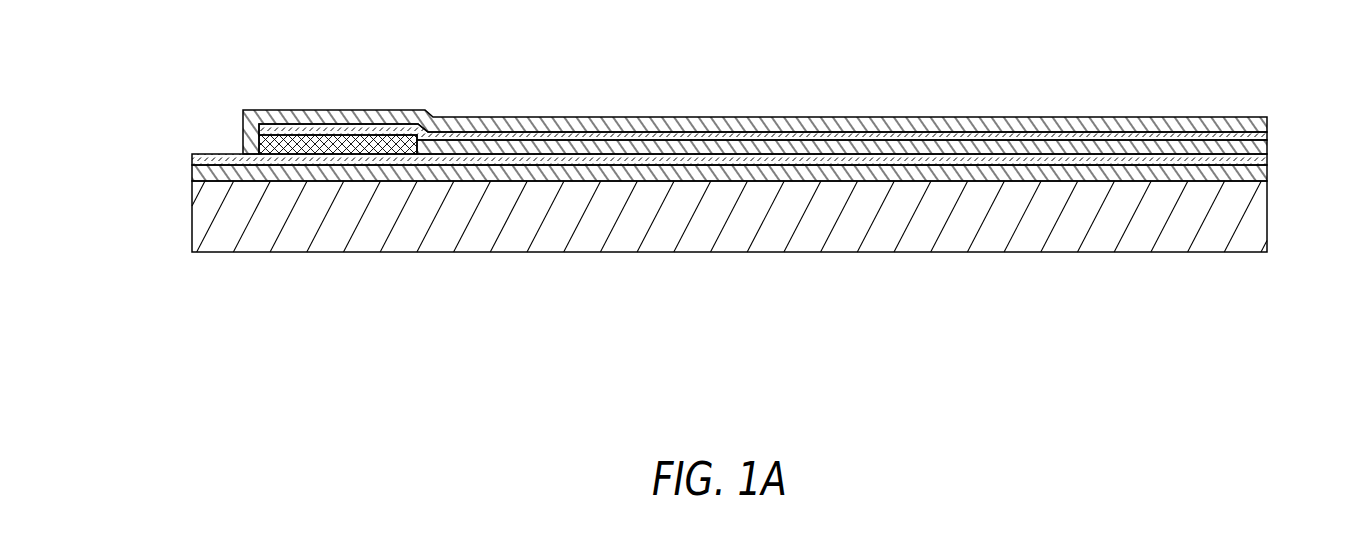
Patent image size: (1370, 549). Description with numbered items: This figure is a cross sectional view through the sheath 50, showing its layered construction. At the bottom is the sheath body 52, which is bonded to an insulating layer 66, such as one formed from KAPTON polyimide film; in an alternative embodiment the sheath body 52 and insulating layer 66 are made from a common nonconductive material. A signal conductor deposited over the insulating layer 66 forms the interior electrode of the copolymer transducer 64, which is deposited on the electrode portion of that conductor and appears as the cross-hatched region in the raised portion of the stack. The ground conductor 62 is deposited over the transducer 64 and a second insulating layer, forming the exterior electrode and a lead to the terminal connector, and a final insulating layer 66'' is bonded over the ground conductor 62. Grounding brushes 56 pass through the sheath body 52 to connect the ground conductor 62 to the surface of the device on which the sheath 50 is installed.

The sheath 50 is at (150, 170).
The sheath body 52 is at (395, 248).
The grounding brushes 56 is at (1268, 162).
The ground conductor 62 is at (1268, 133).
The copolymer transducer 64 is at (307, 142).
The insulating layer 66 is at (778, 205).
The final insulating layer 66'' is at (795, 94).